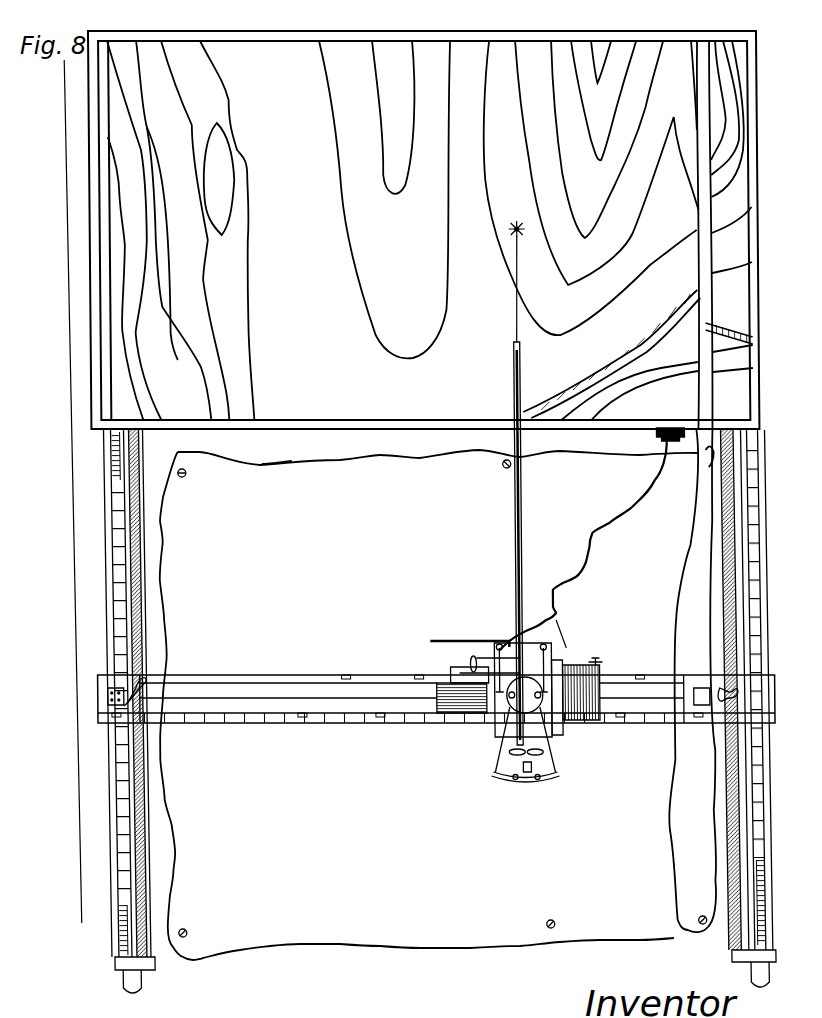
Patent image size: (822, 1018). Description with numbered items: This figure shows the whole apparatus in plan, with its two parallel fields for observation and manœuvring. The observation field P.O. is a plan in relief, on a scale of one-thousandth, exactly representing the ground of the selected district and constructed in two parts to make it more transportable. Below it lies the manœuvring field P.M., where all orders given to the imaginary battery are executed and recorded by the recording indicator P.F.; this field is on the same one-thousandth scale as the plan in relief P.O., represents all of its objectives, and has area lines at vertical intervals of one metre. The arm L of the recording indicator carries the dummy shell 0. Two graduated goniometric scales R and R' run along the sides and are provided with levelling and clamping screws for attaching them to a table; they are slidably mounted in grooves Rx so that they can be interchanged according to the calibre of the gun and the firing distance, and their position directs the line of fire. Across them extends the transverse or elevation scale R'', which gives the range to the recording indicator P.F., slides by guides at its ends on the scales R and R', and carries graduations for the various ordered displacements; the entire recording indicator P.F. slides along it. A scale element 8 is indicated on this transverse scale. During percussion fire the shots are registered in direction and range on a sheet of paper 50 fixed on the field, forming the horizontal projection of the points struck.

The observation field P.O. is at (398, 242).
The sheet of paper 50 is at (283, 492).
The manœuvring field P.M. is at (353, 950).
The arm L is at (514, 495).
The dummy shell 0 is at (513, 234).
The transverse scale R'' is at (400, 679).
The scale rail 8 is at (366, 686).
The recording indicator P.F. is at (504, 714).
The graduated goniometric scale R is at (97, 711).
The grooves Rx is at (114, 908).
The graduated goniometric scale R' is at (718, 708).